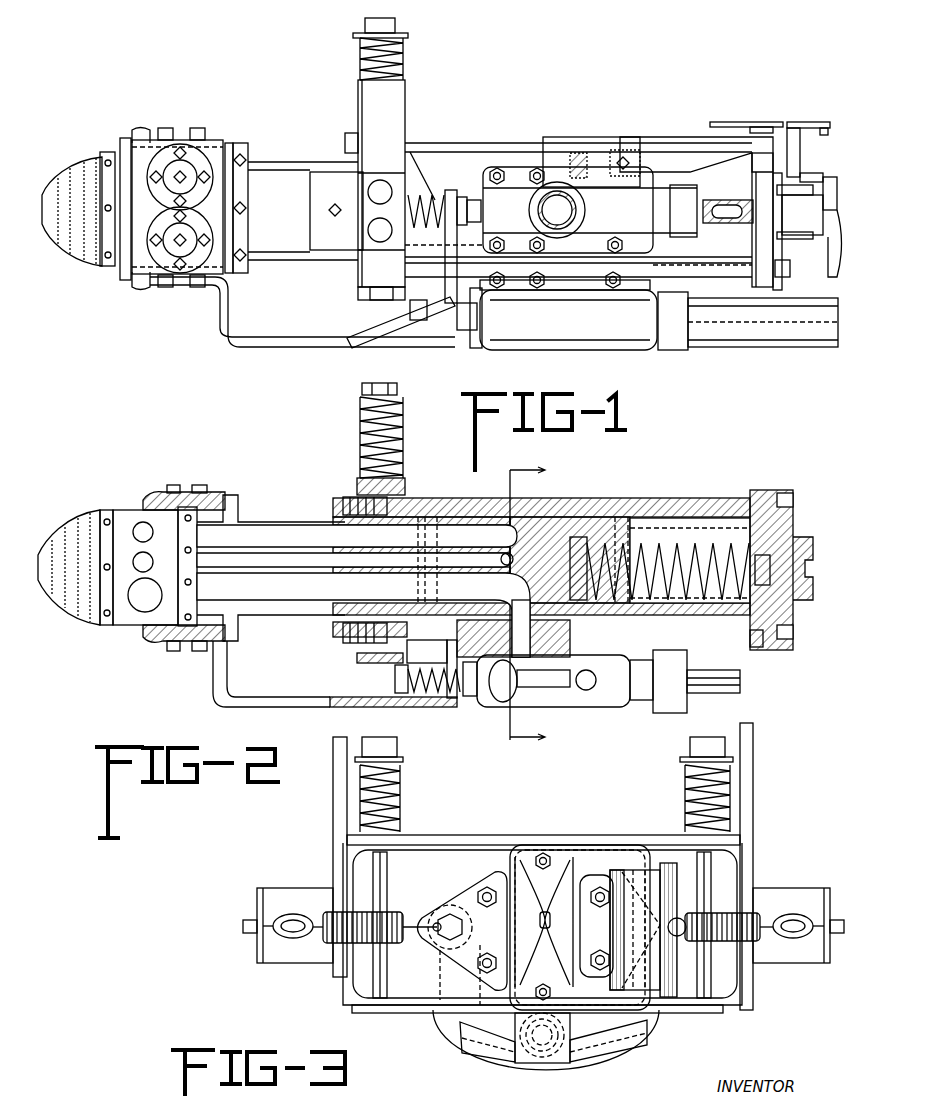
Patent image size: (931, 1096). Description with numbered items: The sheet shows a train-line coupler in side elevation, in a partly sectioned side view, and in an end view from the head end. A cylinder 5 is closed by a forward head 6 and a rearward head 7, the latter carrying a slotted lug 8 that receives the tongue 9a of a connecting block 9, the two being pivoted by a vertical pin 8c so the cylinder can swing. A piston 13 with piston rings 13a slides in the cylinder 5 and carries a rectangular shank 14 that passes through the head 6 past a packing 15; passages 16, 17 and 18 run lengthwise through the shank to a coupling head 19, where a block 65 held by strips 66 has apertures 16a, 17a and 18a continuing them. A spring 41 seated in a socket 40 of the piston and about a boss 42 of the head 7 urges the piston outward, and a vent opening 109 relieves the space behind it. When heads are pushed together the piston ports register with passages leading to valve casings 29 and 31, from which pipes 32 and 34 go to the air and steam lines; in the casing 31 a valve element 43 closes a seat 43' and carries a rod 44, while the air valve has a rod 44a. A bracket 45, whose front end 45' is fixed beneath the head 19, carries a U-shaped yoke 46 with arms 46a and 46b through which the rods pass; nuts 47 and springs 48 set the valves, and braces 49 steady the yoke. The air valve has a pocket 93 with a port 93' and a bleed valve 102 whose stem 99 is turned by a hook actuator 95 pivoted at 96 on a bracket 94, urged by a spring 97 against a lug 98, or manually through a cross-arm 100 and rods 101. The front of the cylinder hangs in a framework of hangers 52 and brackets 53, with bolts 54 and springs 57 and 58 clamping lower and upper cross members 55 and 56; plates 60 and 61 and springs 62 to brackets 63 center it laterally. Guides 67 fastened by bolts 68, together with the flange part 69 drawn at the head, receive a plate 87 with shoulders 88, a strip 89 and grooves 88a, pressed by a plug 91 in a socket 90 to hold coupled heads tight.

In FIG. 1, the cylinder 5 is at (492, 152).
In FIG. 2, the cylinder 5 is at (468, 500).
In FIG. 2, the head 6 is at (355, 497).
In FIG. 2, the head 7 is at (773, 500).
In FIG. 1, the lug or boss 8 is at (783, 250).
In FIG. 2, the lug or boss 8 is at (805, 540).
In FIG. 1, the vertical pin 8c is at (812, 173).
In FIG. 1, the connecting block 9 is at (835, 177).
In FIG. 1, the tongue 9a is at (832, 247).
In FIG. 2, the piston 13 is at (548, 518).
In FIG. 2, the piston rings 13a is at (437, 517).
In FIG. 1, the shank or stem 14 is at (297, 172).
In FIG. 2, the shank or stem 14 is at (300, 615).
In FIG. 2, the packing 15 is at (345, 630).
In FIG. 2, the passage 16 is at (357, 536).
In FIG. 2, the aperture 16a is at (146, 531).
In FIG. 2, the passage 17 is at (355, 562).
In FIG. 2, the aperture 17a is at (148, 561).
In FIG. 2, the passage 18 is at (363, 615).
In FIG. 2, the aperture 18a is at (145, 595).
In FIG. 1, the head 19 is at (78, 242).
In FIG. 2, the head 19 is at (72, 604).
In FIG. 3, the head 19 is at (478, 1042).
In FIG. 1, the valve casing 29 is at (590, 210).
In FIG. 1, the tubular member 31 is at (636, 304).
In FIG. 2, the tubular member 31 is at (641, 714).
In FIG. 1, the pipe 32 is at (567, 218).
In FIG. 1, the pipe 34 is at (806, 336).
In FIG. 2, the socket 40 is at (580, 538).
In FIG. 2, the spring 41 is at (690, 543).
In FIG. 2, the boss 42 is at (765, 572).
In FIG. 2, the valve element 43 is at (553, 697).
In FIG. 2, the valve seat 43' is at (513, 694).
In FIG. 1, the rod 44 is at (470, 331).
In FIG. 2, the rod 44 is at (516, 680).
In FIG. 1, the valve rod 44a is at (460, 198).
In FIG. 1, the bracket 45 is at (302, 330).
In FIG. 2, the bracket 45 is at (335, 694).
In FIG. 3, the bracket 45 is at (523, 1080).
In FIG. 1, the front end 45' is at (244, 295).
In FIG. 2, the front end 45' is at (242, 656).
In FIG. 2, the U-shaped yoke 46 is at (456, 694).
In FIG. 3, the U-shaped yoke 46 is at (672, 1036).
In FIG. 1, the arm 46a is at (450, 258).
In FIG. 3, the arm 46a is at (690, 980).
In FIG. 3, the arm 46b is at (459, 975).
In FIG. 1, the nuts 47 is at (446, 195).
In FIG. 2, the nuts 47 is at (456, 672).
In FIG. 1, the springs 48 is at (410, 192).
In FIG. 2, the springs 48 is at (430, 694).
In FIG. 1, the braces 49 is at (385, 324).
In FIG. 2, the braces 49 is at (413, 664).
In FIG. 3, the braces 49 is at (530, 972).
In FIG. 3, the hangers 52 is at (333, 799).
In FIG. 3, the brackets 53 is at (345, 997).
In FIG. 2, the bolts 54 is at (390, 386).
In FIG. 3, the bolts 54 is at (388, 886).
In FIG. 3, the lower cross member 55 is at (430, 1013).
In FIG. 2, the upper cross member 56 is at (405, 480).
In FIG. 3, the upper cross member 56 is at (585, 835).
In FIG. 2, the spring 57 is at (362, 441).
In FIG. 3, the spring 57 is at (397, 810).
In FIG. 2, the spring 58 is at (403, 421).
In FIG. 3, the spring 58 is at (400, 786).
In FIG. 3, the plate 60 is at (462, 957).
In FIG. 3, the plate 61 is at (596, 926).
In FIG. 3, the springs 62 is at (330, 937).
In FIG. 3, the brackets 63 is at (288, 900).
In FIG. 2, the block 65 is at (125, 617).
In FIG. 1, the strips 66 is at (110, 176).
In FIG. 2, the strips 66 is at (105, 513).
In FIG. 2, the guides 67 is at (185, 505).
In FIG. 3, the guides 67 is at (540, 886).
In FIG. 1, the bolts 68 is at (197, 290).
In FIG. 2, the bolts 68 is at (197, 652).
In FIG. 1, the flange 69 is at (141, 287).
In FIG. 2, the flange 69 is at (150, 492).
In FIG. 1, the plate 87 is at (228, 150).
In FIG. 3, the plate 87 is at (680, 987).
In FIG. 1, the shoulders 88 is at (125, 282).
In FIG. 3, the shoulders 88 is at (660, 863).
In FIG. 3, the grooves 88a is at (621, 870).
In FIG. 1, the strip 89 is at (243, 148).
In FIG. 1, the internally threaded socket 90 is at (145, 138).
In FIG. 1, the screw plug 91 is at (183, 170).
In FIG. 1, the chamber or pocket 93 is at (728, 226).
In FIG. 1, the port 93' is at (700, 237).
In FIG. 1, the bracket 94 is at (552, 165).
In FIG. 1, the hook-shaped actuator 95 is at (663, 140).
In FIG. 1, the pivot 96 is at (625, 157).
In FIG. 1, the spring 97 is at (578, 152).
In FIG. 1, the arm or lug 98 is at (746, 220).
In FIG. 1, the valve stem 99 is at (797, 140).
In FIG. 1, the cross-arm 100 is at (768, 121).
In FIG. 1, the actuating rods 101 is at (735, 121).
In FIG. 1, the valve 102 is at (800, 212).
In FIG. 2, the vent opening 109 is at (758, 648).